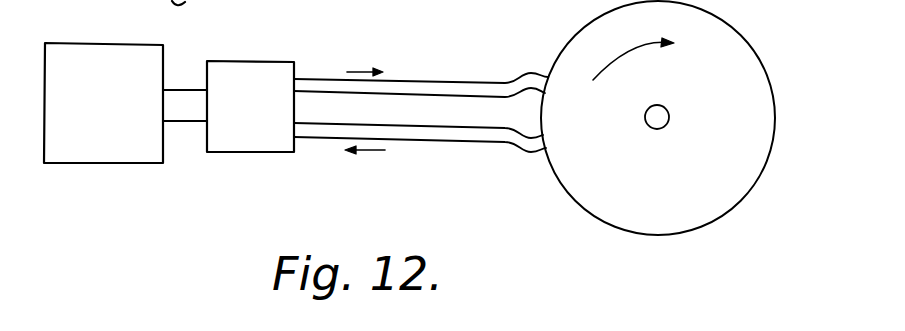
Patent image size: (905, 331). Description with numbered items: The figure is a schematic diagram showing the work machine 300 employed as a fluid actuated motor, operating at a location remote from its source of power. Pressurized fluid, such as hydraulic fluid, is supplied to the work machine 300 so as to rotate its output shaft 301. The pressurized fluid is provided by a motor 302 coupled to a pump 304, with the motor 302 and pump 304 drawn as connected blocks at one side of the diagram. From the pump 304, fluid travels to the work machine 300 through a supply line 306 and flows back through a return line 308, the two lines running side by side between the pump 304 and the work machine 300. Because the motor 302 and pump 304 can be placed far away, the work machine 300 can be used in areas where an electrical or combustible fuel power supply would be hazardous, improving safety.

The work machine 300 is at (590, 21).
The output shaft 301 is at (669, 117).
The motor 302 is at (112, 44).
The pump 304 is at (240, 61).
The supply line 306 is at (418, 81).
The return line 308 is at (418, 140).